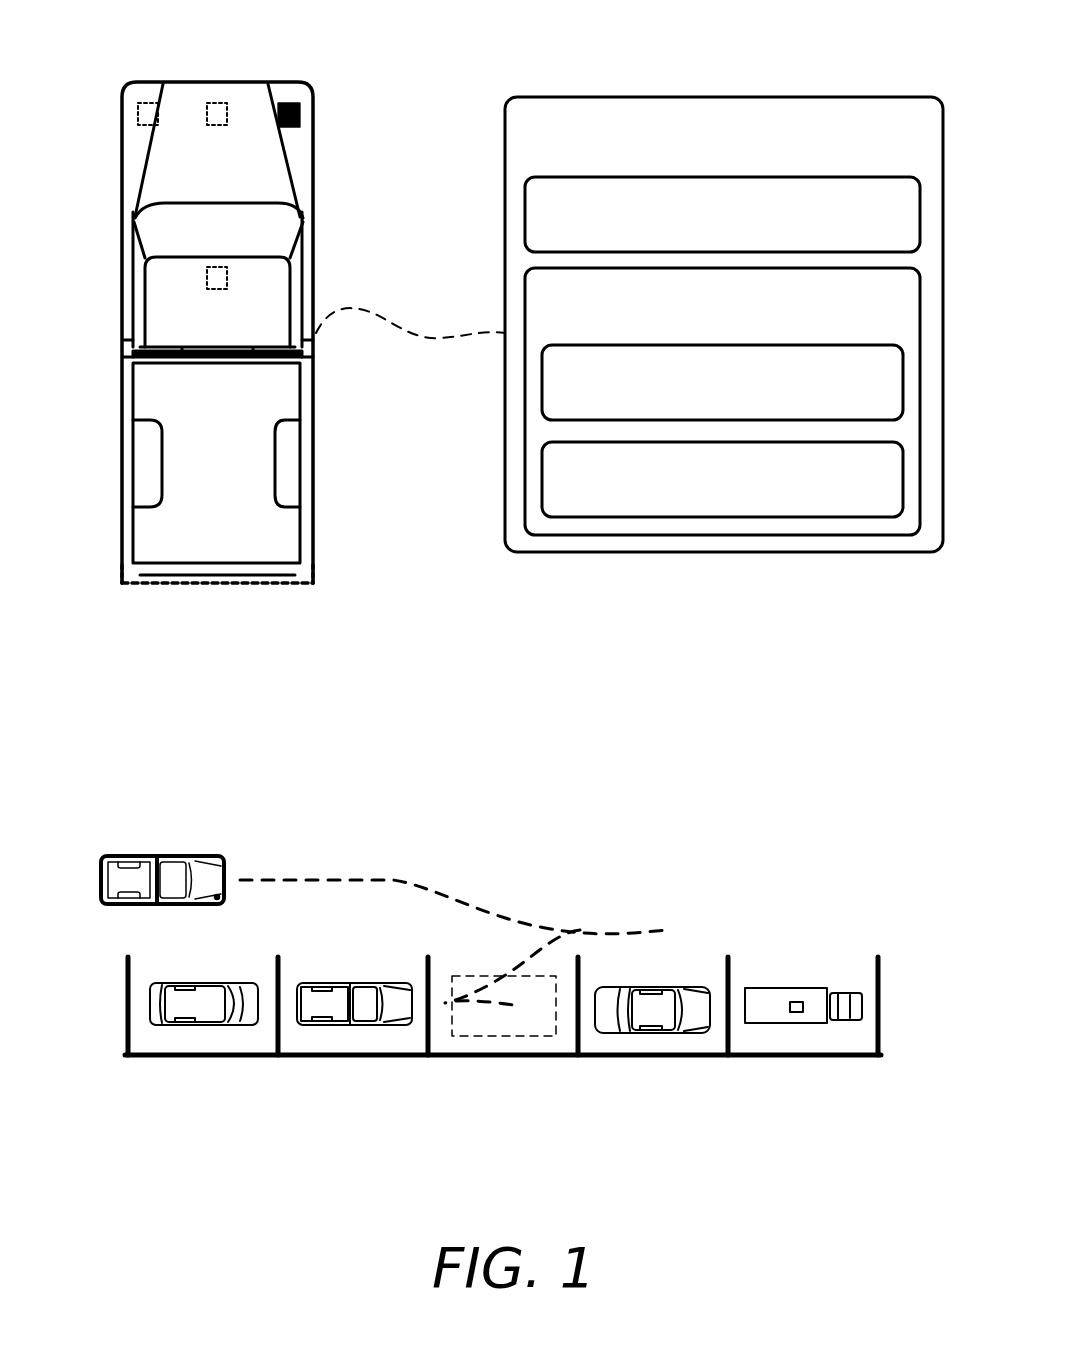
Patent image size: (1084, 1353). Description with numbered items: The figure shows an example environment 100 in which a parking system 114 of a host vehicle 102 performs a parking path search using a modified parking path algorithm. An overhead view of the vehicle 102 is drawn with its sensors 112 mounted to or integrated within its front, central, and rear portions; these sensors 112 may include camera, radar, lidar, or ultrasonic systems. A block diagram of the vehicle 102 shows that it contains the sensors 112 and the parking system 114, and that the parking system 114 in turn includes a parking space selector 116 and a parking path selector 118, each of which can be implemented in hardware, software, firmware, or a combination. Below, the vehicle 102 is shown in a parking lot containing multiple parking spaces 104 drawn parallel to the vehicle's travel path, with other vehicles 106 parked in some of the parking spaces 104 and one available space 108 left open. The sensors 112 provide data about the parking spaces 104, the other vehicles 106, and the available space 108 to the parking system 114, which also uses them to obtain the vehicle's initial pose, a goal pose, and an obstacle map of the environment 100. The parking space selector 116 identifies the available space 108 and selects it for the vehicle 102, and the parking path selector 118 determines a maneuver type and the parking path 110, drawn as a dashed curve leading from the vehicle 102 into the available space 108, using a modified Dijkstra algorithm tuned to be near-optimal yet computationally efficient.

The environment 100 is at (132, 758).
The vehicle 102 is at (243, 585).
The parking spaces 104 is at (880, 940).
The other vehicles 106 is at (203, 1026).
The available space 108 is at (502, 1037).
The parking path 110 is at (397, 882).
The sensors 112 is at (290, 103).
The parking system 114 is at (722, 401).
The parking space selector 116 is at (722, 382).
The parking path selector 118 is at (722, 479).